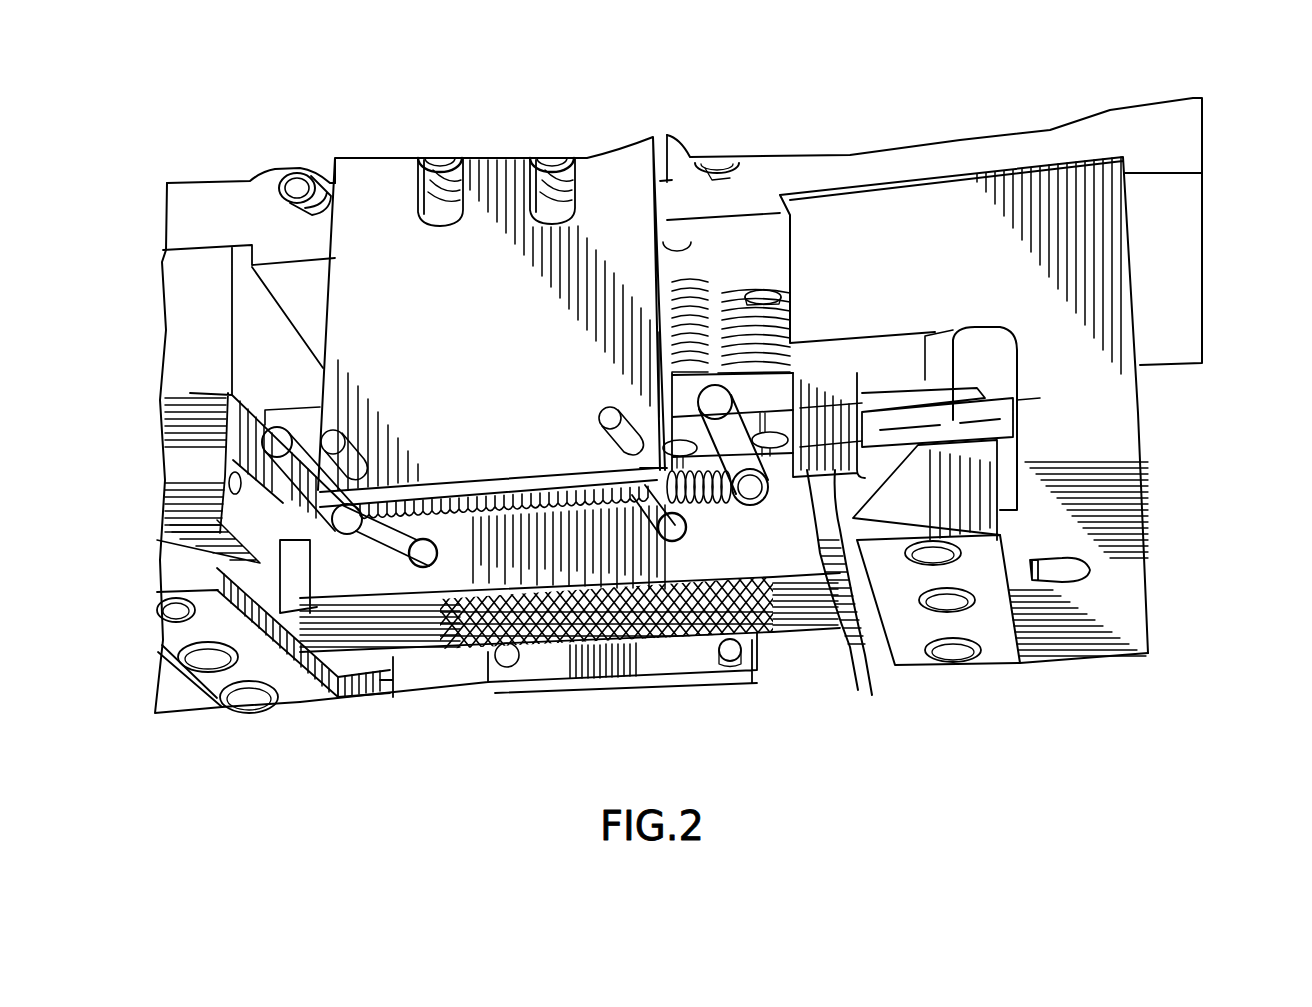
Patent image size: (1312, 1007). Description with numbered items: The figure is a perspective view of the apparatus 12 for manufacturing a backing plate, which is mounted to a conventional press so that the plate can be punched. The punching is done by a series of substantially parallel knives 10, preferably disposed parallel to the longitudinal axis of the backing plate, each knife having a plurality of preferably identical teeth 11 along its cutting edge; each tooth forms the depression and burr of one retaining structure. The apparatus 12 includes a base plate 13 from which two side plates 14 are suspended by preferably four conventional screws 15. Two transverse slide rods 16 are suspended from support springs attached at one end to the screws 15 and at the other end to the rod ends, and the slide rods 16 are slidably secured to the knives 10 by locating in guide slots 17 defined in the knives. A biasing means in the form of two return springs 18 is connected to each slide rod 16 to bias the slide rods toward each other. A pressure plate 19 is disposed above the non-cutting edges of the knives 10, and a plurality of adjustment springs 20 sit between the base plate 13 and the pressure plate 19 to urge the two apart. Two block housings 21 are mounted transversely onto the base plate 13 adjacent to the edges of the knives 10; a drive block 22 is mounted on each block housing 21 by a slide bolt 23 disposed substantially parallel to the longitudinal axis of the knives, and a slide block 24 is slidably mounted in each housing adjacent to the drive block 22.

The knives 10 is at (823, 636).
The teeth 11 is at (727, 660).
The apparatus 12 is at (928, 128).
The base plate 13 is at (1207, 265).
The side plates 14 is at (677, 177).
The screws 15 is at (450, 158).
The slide rods 16 is at (300, 478).
The guide slots 17 is at (787, 470).
The return springs 18 is at (490, 520).
The pressure plate 19 is at (725, 500).
The adjustment springs 20 is at (718, 300).
The block housings 21 is at (1148, 393).
The drive block 22 is at (855, 545).
The slide bolt 23 is at (1013, 423).
The slide block 24 is at (990, 525).